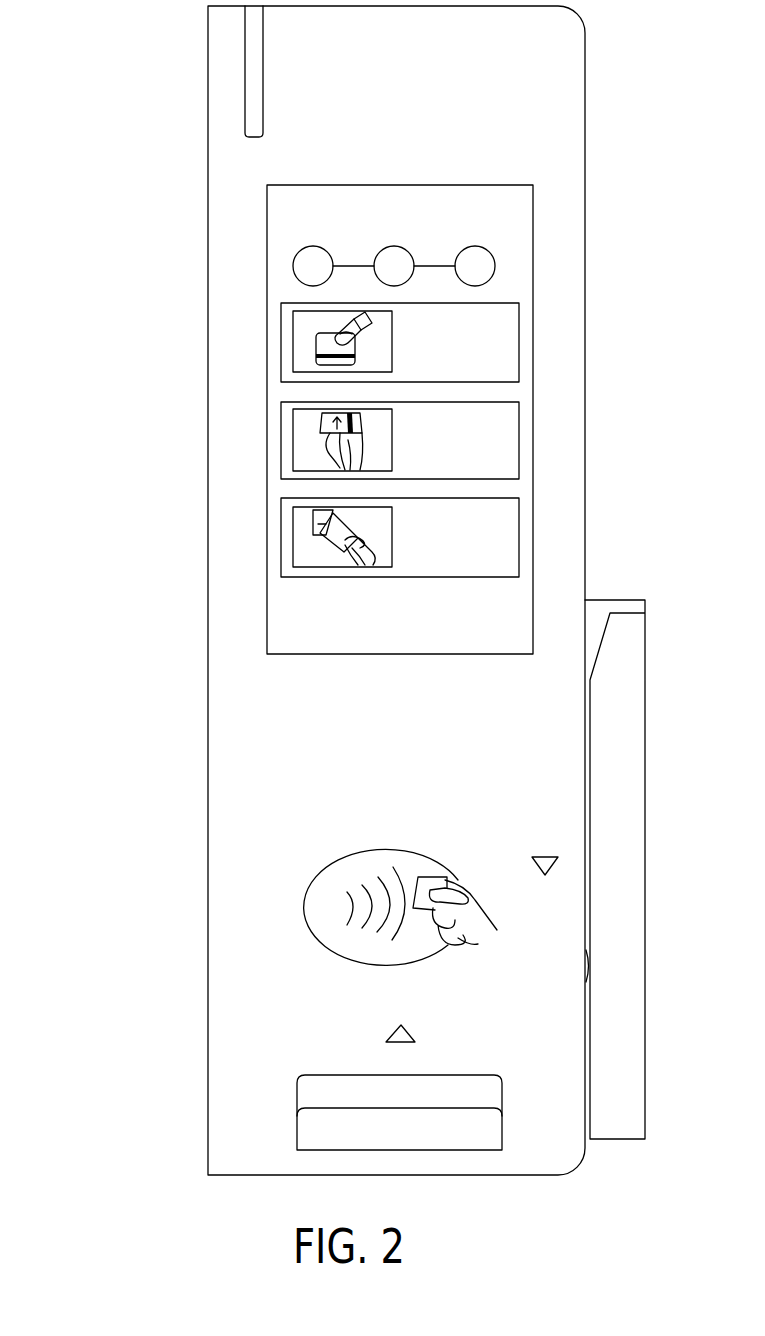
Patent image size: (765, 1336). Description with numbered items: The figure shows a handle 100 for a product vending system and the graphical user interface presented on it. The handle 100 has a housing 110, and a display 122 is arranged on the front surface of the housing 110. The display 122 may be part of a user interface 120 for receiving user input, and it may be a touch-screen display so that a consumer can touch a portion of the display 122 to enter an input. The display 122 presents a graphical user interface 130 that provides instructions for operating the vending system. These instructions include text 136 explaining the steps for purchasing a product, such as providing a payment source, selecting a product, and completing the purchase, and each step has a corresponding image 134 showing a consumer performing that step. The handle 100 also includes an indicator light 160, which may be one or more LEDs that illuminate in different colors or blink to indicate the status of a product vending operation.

The handle 100 is at (113, 314).
The housing 110 is at (223, 752).
The user interface 120 is at (567, 331).
The display 122 is at (533, 482).
The graphical user interface 130 is at (300, 227).
The image 134 is at (313, 449).
The text 136 is at (480, 537).
The indicator light 160 is at (263, 75).